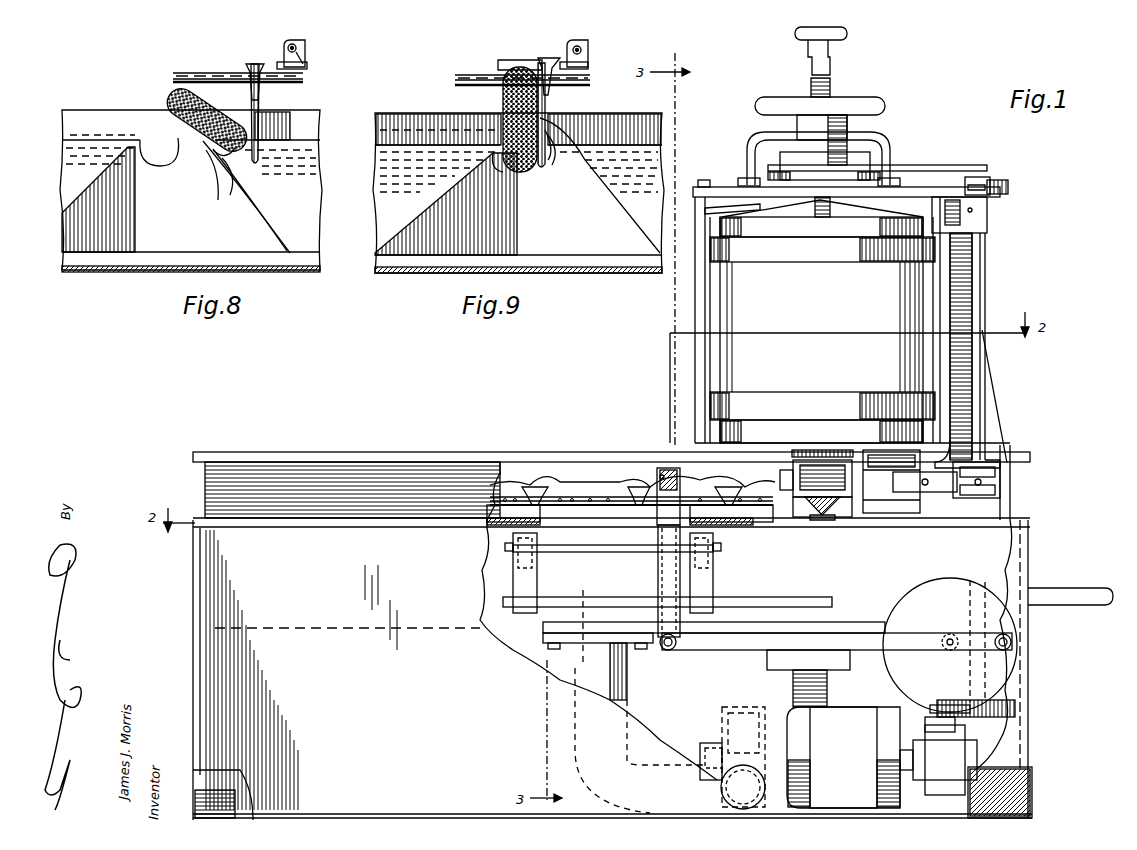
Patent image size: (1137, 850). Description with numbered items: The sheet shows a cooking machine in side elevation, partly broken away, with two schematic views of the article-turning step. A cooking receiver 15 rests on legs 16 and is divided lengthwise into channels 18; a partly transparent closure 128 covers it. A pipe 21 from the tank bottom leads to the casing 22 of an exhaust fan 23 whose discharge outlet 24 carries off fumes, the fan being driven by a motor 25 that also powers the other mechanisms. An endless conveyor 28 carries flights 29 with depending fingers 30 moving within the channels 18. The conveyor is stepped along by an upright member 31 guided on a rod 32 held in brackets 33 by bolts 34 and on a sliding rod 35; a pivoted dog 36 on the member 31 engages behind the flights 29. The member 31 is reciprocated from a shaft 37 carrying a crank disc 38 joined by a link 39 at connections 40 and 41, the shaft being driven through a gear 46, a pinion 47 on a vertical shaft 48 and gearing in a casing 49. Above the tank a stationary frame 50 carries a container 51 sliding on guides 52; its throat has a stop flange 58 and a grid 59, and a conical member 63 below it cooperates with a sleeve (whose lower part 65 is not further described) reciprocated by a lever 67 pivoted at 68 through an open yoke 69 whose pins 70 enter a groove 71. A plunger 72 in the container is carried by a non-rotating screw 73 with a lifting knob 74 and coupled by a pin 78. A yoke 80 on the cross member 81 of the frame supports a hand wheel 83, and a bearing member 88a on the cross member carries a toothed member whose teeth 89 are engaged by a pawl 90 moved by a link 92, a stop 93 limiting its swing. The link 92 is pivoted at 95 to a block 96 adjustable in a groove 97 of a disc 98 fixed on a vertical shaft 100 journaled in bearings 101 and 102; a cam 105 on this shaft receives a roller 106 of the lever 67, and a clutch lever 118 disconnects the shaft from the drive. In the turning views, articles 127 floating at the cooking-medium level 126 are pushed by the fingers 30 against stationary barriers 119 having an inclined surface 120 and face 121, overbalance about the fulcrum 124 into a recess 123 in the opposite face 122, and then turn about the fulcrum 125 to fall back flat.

In FIG. 8, the cooking receiver 15 is at (290, 262).
In FIG. 9, the cooking receiver 15 is at (632, 117).
In FIG. 1, the cooking receiver 15 is at (318, 636).
In FIG. 1, the legs 16 is at (1030, 794).
In FIG. 8, the channels 18 is at (305, 226).
In FIG. 1, the pipe 21 is at (628, 682).
In FIG. 1, the casing 22 is at (724, 710).
In FIG. 1, the exhaust fan 23 is at (708, 750).
In FIG. 1, the discharge outlet 24 is at (722, 790).
In FIG. 1, the motor 25 is at (833, 729).
In FIG. 8, the endless conveyor 28 is at (207, 76).
In FIG. 9, the endless conveyor 28 is at (575, 72).
In FIG. 1, the endless conveyor 28 is at (631, 508).
In FIG. 8, the flights 29 is at (262, 62).
In FIG. 9, the flights 29 is at (548, 62).
In FIG. 1, the flights 29 is at (540, 487).
In FIG. 8, the depending fingers 30 is at (262, 112).
In FIG. 9, the depending fingers 30 is at (545, 108).
In FIG. 1, the depending fingers 30 is at (730, 511).
In FIG. 8, the upright member 31 is at (310, 66).
In FIG. 9, the upright member 31 is at (592, 48).
In FIG. 1, the upright member 31 is at (658, 572).
In FIG. 1, the bar or rod 32 is at (595, 552).
In FIG. 1, the brackets 33 is at (505, 546).
In FIG. 1, the fastening screws or bolts 34 is at (517, 556).
In FIG. 1, the bar or rod 35 is at (612, 598).
In FIG. 8, the dog or pawl 36 is at (289, 42).
In FIG. 9, the dog or pawl 36 is at (590, 36).
In FIG. 1, the dog or pawl 36 is at (660, 468).
In FIG. 1, the shaft 37 is at (955, 652).
In FIG. 1, the disc or crank 38 is at (995, 620).
In FIG. 1, the link 39 is at (945, 634).
In FIG. 1, the connection 40 is at (1012, 643).
In FIG. 1, the connection 41 is at (674, 650).
In FIG. 1, the gear 46 is at (1016, 710).
In FIG. 1, the pinion 47 is at (935, 710).
In FIG. 1, the vertical shaft 48 is at (955, 722).
In FIG. 1, the casing 49 is at (965, 752).
In FIG. 1, the frame 50 is at (695, 322).
In FIG. 1, the hopper or container 51 is at (720, 333).
In FIG. 1, the guides 52 is at (728, 440).
In FIG. 1, the annular flange 58 is at (800, 452).
In FIG. 1, the grid 59 is at (975, 413).
In FIG. 1, the conical member 63 is at (822, 512).
In FIG. 1, the cone 65 is at (830, 501).
In FIG. 1, the lever 67 is at (885, 470).
In FIG. 1, the pivot 68 is at (915, 485).
In FIG. 1, the open yoke 69 is at (840, 462).
In FIG. 1, the pins 70 is at (812, 440).
In FIG. 1, the peripheral groove 71 is at (812, 482).
In FIG. 1, the plunger 72 is at (780, 238).
In FIG. 1, the screw 73 is at (810, 90).
In FIG. 1, the lifting knob 74 is at (847, 34).
In FIG. 1, the pin 78 is at (832, 212).
In FIG. 1, the yoke or bearing 80 is at (888, 142).
In FIG. 1, the cross member 81 is at (702, 182).
In FIG. 1, the hand wheel 83 is at (885, 106).
In FIG. 1, the bearing member 88a is at (772, 200).
In FIG. 1, the teeth 89 is at (782, 158).
In FIG. 1, the pawl 90 is at (828, 178).
In FIG. 1, the link 92 is at (922, 165).
In FIG. 1, the stop device 93 is at (830, 170).
In FIG. 1, the pivotal connection 95 is at (978, 176).
In FIG. 1, the block 96 is at (990, 180).
In FIG. 1, the groove 97 is at (990, 195).
In FIG. 1, the disc 98 is at (1008, 187).
In FIG. 1, the vertical shaft 100 is at (975, 370).
In FIG. 1, the bearing 101 is at (987, 226).
In FIG. 1, the bearing 102 is at (1010, 505).
In FIG. 1, the cam 105 is at (1000, 470).
In FIG. 1, the roller 106 is at (1000, 485).
In FIG. 1, the lever 118 is at (1095, 590).
In FIG. 8, the stationary barriers 119 is at (95, 240).
In FIG. 9, the stationary barriers 119 is at (618, 250).
In FIG. 8, the inclined surface 120 is at (265, 215).
In FIG. 9, the inclined surface 120 is at (610, 205).
In FIG. 8, the inclined face 121 is at (226, 186).
In FIG. 9, the inclined face 121 is at (575, 128).
In FIG. 8, the face 122 is at (80, 195).
In FIG. 9, the face 122 is at (440, 200).
In FIG. 8, the recess 123 is at (162, 139).
In FIG. 9, the recess 123 is at (522, 176).
In FIG. 8, the fulcrum 124 is at (210, 168).
In FIG. 9, the fulcrum 124 is at (555, 140).
In FIG. 8, the fulcrum 125 is at (114, 187).
In FIG. 9, the fulcrum 125 is at (490, 177).
In FIG. 8, the level of the cooking medium 126 is at (80, 137).
In FIG. 9, the level of the cooking medium 126 is at (638, 141).
In FIG. 8, the articles 127 is at (170, 106).
In FIG. 9, the articles 127 is at (512, 70).
In FIG. 1, the closure 128 is at (303, 470).